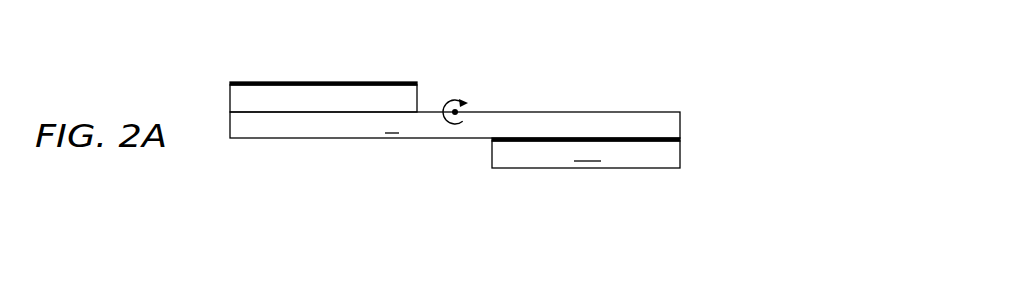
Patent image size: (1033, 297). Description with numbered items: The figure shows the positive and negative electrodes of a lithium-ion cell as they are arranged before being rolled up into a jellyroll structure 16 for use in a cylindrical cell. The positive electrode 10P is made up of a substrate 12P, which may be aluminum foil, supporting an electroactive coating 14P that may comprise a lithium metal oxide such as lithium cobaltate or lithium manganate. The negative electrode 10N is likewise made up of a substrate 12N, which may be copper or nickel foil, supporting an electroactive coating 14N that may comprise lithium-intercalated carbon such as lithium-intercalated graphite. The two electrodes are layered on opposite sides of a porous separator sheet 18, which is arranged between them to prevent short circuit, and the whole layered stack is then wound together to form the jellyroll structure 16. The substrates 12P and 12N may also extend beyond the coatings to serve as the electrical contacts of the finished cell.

The jellyroll structure 16 is at (683, 52).
The positive electrode 10P is at (209, 100).
The substrate of the positive electrode 12P is at (370, 82).
The electroactive coating of the positive electrode 14P is at (323, 98).
The porous separator sheet 18 is at (455, 125).
The negative electrode 10N is at (703, 160).
The substrate of the negative electrode 12N is at (624, 138).
The electroactive coating of the negative electrode 14N is at (586, 154).